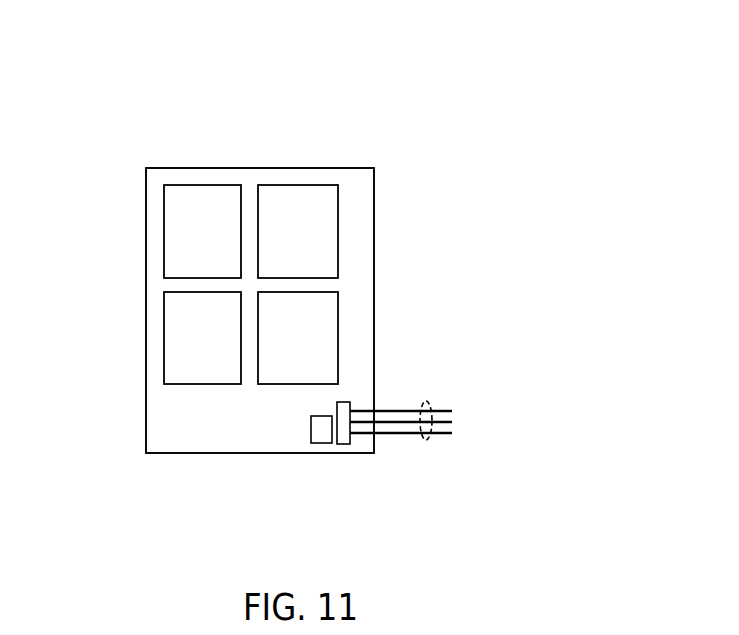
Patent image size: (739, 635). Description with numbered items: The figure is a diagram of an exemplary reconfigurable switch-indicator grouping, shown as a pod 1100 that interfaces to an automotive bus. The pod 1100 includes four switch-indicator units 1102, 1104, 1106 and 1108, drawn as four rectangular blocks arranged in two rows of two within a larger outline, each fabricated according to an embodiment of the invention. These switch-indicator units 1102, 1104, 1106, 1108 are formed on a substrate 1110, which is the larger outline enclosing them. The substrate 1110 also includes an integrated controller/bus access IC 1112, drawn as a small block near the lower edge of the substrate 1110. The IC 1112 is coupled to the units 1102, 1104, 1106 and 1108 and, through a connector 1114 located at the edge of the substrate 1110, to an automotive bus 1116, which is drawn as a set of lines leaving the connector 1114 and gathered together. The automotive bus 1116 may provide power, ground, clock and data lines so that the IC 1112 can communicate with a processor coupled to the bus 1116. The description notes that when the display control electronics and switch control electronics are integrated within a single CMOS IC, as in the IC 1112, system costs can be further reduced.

The pod 1100 is at (558, 96).
The switch-indicator unit 1102 is at (190, 185).
The switch-indicator unit 1104 is at (314, 185).
The switch-indicator unit 1106 is at (338, 340).
The switch-indicator unit 1108 is at (165, 340).
The substrate 1110 is at (146, 408).
The integrated controller/bus access IC 1112 is at (311, 435).
The connector 1114 is at (346, 445).
The automotive bus 1116 is at (426, 440).